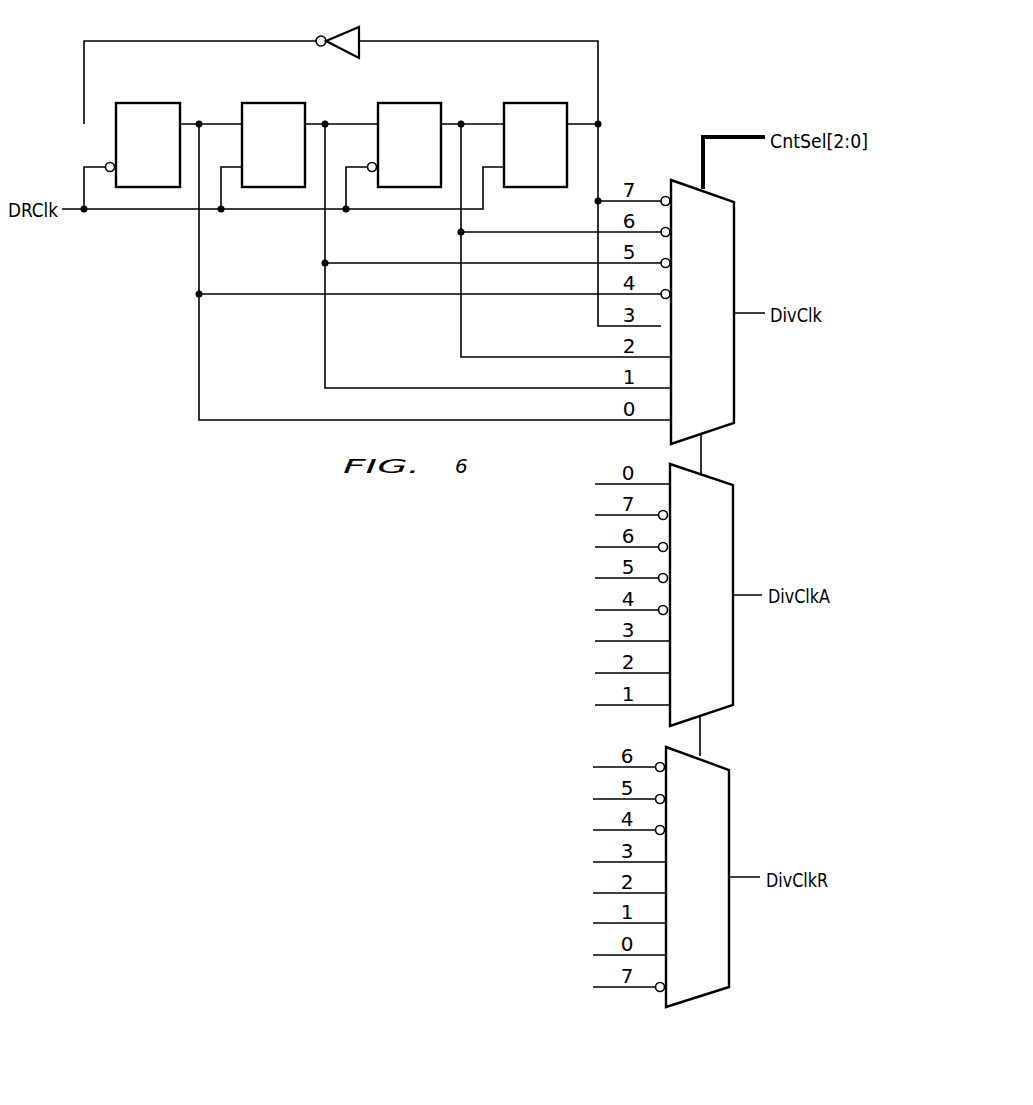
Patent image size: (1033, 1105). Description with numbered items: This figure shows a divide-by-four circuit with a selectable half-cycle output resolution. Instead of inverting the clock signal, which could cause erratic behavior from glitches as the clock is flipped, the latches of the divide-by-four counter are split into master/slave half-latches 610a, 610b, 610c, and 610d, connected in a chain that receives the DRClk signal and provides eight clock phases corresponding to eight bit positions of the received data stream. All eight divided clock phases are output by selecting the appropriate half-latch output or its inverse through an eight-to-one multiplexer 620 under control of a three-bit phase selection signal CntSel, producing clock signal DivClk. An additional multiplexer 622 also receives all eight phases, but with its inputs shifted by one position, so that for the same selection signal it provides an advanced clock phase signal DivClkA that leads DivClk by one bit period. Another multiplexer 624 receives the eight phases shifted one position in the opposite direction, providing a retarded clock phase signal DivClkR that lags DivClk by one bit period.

The master/slave half-latch 610a is at (147, 103).
The master/slave half-latch 610b is at (273, 103).
The master/slave half-latch 610c is at (410, 103).
The master/slave half-latch 610d is at (536, 103).
The 8:1 multiplexer 620 is at (734, 358).
The multiplexer 622 is at (733, 642).
The multiplexer 624 is at (729, 923).